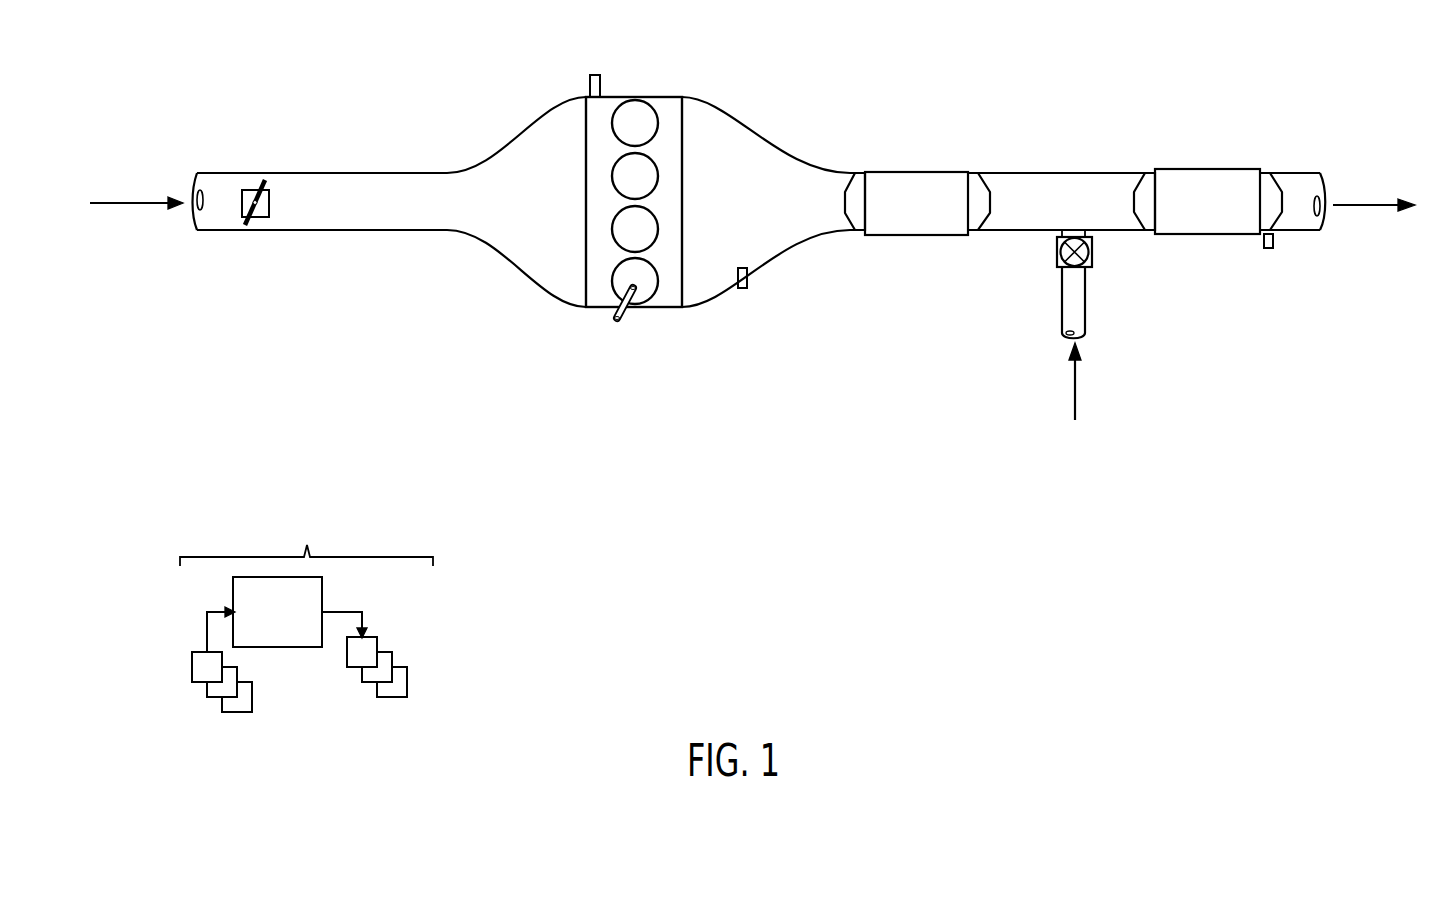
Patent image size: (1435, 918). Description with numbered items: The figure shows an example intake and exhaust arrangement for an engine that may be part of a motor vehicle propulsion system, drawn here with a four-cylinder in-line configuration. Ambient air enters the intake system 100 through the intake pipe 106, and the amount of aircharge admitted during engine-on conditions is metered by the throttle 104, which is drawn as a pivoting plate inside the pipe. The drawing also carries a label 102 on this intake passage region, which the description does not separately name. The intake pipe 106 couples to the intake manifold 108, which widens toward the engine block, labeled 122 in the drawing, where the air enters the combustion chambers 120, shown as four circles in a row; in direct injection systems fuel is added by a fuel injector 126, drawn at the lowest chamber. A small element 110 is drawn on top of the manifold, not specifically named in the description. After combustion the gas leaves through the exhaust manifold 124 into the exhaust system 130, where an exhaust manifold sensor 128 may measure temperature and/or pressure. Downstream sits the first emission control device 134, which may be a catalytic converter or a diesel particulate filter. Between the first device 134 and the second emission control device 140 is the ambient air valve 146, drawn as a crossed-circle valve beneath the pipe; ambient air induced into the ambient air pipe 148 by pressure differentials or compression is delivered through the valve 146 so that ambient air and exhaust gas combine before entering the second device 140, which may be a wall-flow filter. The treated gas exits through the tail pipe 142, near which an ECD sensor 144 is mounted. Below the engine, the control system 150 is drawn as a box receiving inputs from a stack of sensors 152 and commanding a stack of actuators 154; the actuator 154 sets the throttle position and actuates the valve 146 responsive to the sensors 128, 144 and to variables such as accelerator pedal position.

The intake system 100 is at (272, 92).
The intake passage 102 is at (392, 152).
The throttle 104 is at (267, 210).
The intake pipe 106 is at (301, 232).
The intake manifold 108 is at (550, 212).
The intake sensor 110 is at (601, 94).
The combustion chamber 120 is at (658, 117).
The engine 122 is at (684, 185).
The exhaust manifold 124 is at (807, 212).
The fuel injector 126 is at (628, 313).
The exhaust manifold sensor 128 is at (748, 270).
The exhaust system 130 is at (797, 138).
The first emission control device 134 is at (932, 212).
The second emission control device 140 is at (1223, 211).
The tail pipe 142 is at (1268, 172).
The ECD sensor 144 is at (1275, 240).
The ambient air valve 146 is at (1075, 180).
The ambient air pipe 148 is at (1086, 295).
The control system 150 is at (277, 612).
The sensors 152 is at (180, 718).
The actuator 154 is at (337, 700).